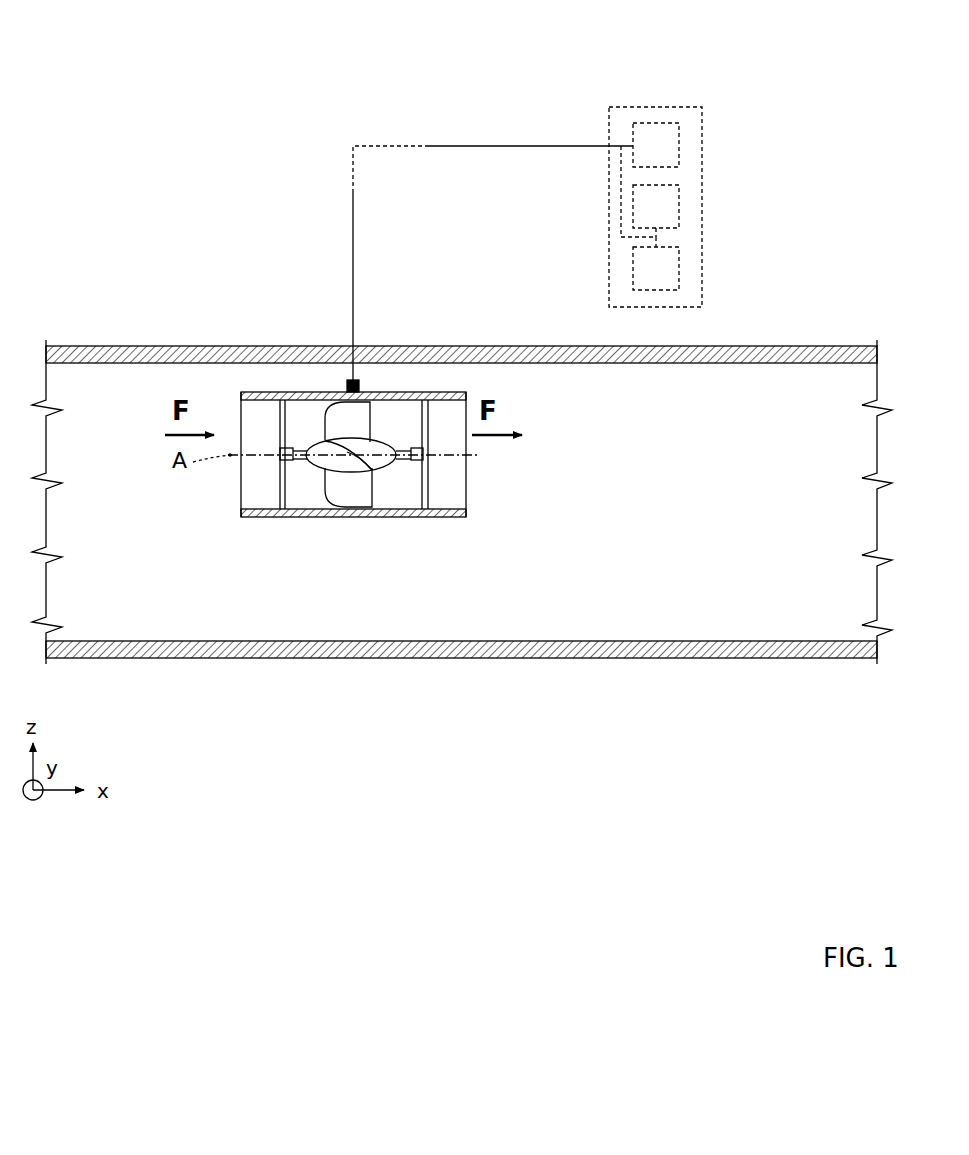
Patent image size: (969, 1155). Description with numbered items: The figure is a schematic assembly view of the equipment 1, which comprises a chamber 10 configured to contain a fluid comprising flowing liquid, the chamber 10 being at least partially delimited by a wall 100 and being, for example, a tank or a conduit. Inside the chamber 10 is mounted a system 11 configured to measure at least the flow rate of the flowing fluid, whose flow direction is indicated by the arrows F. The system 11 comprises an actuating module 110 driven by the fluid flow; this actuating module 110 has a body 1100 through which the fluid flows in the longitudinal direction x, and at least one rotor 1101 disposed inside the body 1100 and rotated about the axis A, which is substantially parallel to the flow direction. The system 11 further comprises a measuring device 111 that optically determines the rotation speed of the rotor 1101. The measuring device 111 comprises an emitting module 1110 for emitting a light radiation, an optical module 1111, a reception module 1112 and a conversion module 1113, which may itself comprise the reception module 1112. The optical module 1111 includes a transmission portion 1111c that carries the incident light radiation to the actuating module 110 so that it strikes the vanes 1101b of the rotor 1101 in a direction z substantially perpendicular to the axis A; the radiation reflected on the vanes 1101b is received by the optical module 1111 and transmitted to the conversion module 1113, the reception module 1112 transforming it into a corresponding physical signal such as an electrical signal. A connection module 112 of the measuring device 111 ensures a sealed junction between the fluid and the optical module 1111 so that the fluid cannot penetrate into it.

The equipment 1 is at (196, 70).
The chamber 10 is at (462, 539).
The wall 100 is at (603, 647).
The system 11 is at (448, 227).
The actuating module 110 is at (314, 434).
The body 1100 is at (366, 512).
The rotor 1101 is at (361, 410).
The vanes 1101b is at (368, 430).
The measuring device 111 is at (513, 227).
The emitting module 1110 is at (672, 145).
The optical module 1111 is at (436, 240).
The transmission portion 1111c is at (334, 392).
The reception module 1112 is at (671, 215).
The conversion module 1113 is at (671, 278).
The connection module 112 is at (359, 383).